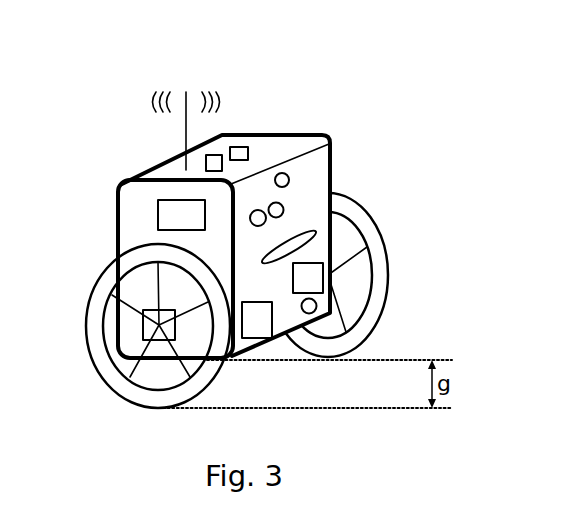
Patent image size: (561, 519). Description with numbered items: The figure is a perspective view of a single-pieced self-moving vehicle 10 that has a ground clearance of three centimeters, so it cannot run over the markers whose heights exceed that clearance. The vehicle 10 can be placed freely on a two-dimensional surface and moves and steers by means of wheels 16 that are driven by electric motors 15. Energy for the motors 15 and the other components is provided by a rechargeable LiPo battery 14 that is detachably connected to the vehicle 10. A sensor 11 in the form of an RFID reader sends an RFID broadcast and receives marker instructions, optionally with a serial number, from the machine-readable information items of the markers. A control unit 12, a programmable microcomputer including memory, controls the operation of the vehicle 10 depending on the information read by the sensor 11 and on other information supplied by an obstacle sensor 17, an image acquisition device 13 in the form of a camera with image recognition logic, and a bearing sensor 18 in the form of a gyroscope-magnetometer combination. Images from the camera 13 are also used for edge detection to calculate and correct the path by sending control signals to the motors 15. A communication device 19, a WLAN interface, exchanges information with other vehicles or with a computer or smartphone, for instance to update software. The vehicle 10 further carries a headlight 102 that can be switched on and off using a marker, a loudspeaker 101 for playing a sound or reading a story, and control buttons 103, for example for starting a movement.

The self-moving vehicle 10 is at (352, 72).
The sensor 11 is at (238, 147).
The control unit 12 is at (182, 215).
The image acquisition device 13 is at (282, 180).
The rechargeable LiPo battery 14 is at (257, 315).
The electric motor 15 is at (148, 316).
The wheel 16 is at (122, 387).
The obstacle sensor 17 is at (276, 210).
The bearing sensor 18 is at (258, 216).
The communication device 19 is at (186, 92).
The loudspeaker 101 is at (316, 308).
The headlight 102 is at (303, 244).
The control button 103 is at (214, 164).